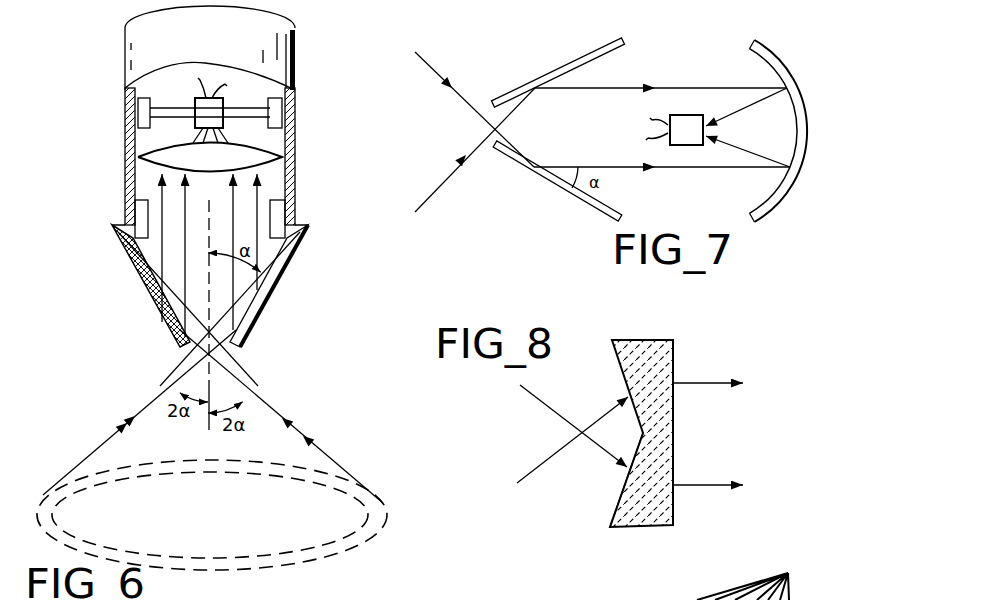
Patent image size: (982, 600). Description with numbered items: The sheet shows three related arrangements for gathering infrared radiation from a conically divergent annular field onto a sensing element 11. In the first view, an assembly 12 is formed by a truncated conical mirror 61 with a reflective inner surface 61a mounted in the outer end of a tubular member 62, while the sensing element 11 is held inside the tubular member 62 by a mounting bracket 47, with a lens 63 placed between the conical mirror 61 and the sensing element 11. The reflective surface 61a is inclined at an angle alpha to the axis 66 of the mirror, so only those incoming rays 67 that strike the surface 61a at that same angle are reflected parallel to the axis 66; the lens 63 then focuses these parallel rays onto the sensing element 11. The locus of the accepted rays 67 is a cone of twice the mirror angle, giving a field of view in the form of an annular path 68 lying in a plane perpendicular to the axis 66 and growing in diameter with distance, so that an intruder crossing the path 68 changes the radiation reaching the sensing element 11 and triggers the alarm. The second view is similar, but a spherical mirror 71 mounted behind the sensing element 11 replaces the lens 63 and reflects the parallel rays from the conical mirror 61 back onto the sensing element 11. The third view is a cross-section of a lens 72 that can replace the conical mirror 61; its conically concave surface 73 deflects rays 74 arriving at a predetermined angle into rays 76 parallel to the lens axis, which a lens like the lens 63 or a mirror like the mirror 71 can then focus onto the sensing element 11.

In FIG. 6, the tubular member 62 is at (280, 37).
In FIG. 6, the mirror assembly 12 is at (306, 221).
In FIG. 6, the sensing element 11 is at (218, 96).
In FIG. 7, the sensing element 11 is at (685, 117).
In FIG. 6, the mounting bracket 47 is at (255, 122).
In FIG. 6, the lens 63 is at (262, 163).
In FIG. 6, the reflective inner surface 61a is at (152, 296).
In FIG. 6, the truncated conical mirror 61 is at (268, 295).
In FIG. 7, the truncated conical mirror 61 is at (597, 47).
In FIG. 6, the rays 67 is at (160, 386).
In FIG. 7, the rays 67 is at (472, 105).
In FIG. 6, the axis 66 is at (206, 424).
In FIG. 6, the annular path 68 is at (373, 533).
In FIG. 7, the spherical mirror 71 is at (788, 60).
In FIG. 8, the lens 72 is at (651, 338).
In FIG. 8, the conically concave surface 73 is at (614, 508).
In FIG. 8, the rays 74 is at (562, 415).
In FIG. 8, the rays 76 is at (697, 383).